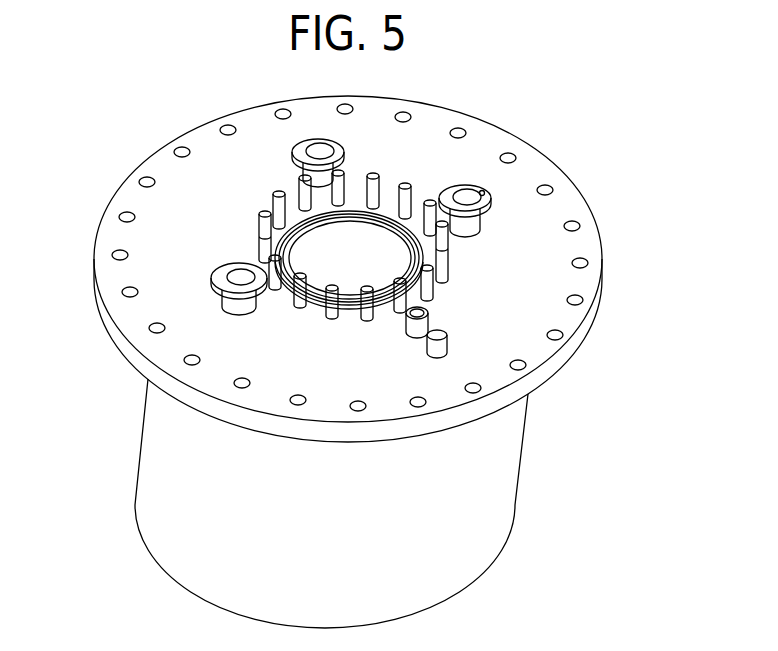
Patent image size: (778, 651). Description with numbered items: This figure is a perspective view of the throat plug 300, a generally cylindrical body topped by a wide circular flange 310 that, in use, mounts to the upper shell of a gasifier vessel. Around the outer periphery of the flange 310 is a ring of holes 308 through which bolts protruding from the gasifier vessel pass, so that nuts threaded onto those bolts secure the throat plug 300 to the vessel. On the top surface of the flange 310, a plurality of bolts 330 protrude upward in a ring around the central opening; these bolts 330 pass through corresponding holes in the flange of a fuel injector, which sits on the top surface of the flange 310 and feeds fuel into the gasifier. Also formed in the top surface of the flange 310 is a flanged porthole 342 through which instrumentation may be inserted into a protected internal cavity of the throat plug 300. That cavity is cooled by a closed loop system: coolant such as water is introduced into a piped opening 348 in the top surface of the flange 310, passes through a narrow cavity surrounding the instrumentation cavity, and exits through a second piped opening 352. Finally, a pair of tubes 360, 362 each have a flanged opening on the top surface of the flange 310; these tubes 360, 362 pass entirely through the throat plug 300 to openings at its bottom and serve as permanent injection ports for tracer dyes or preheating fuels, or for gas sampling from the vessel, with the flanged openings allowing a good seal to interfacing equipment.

The throat plug 300 is at (104, 112).
The holes 308 is at (183, 147).
The flange 310 is at (434, 118).
The bolts 330 is at (373, 176).
The flanged porthole 342 is at (317, 152).
The piped opening 348 is at (438, 330).
The second piped opening 352 is at (408, 320).
The tube 360 is at (466, 188).
The tube 362 is at (233, 268).